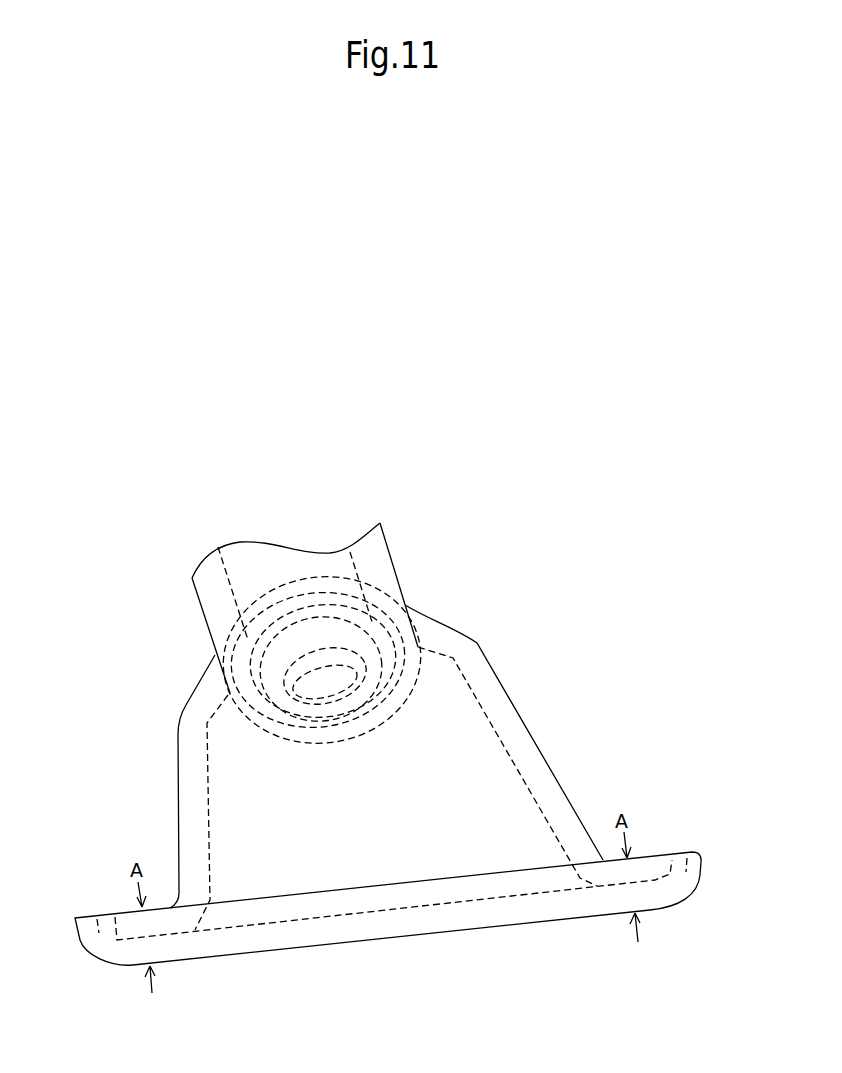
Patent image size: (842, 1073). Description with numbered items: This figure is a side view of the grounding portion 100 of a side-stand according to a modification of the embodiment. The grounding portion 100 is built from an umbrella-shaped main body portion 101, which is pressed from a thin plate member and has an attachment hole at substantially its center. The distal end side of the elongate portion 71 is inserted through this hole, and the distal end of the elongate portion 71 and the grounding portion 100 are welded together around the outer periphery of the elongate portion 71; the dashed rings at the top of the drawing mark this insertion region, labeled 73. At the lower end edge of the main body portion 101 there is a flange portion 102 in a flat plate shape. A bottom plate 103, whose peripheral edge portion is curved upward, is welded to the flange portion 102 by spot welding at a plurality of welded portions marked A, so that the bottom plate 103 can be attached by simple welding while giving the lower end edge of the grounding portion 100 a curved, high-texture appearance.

The elongate portion 71 is at (203, 613).
The opening 73 is at (233, 586).
The grounding portion 100 is at (532, 728).
The main body portion 101 is at (503, 807).
The flange portion 102 is at (163, 940).
The bottom plate 103 is at (684, 856).